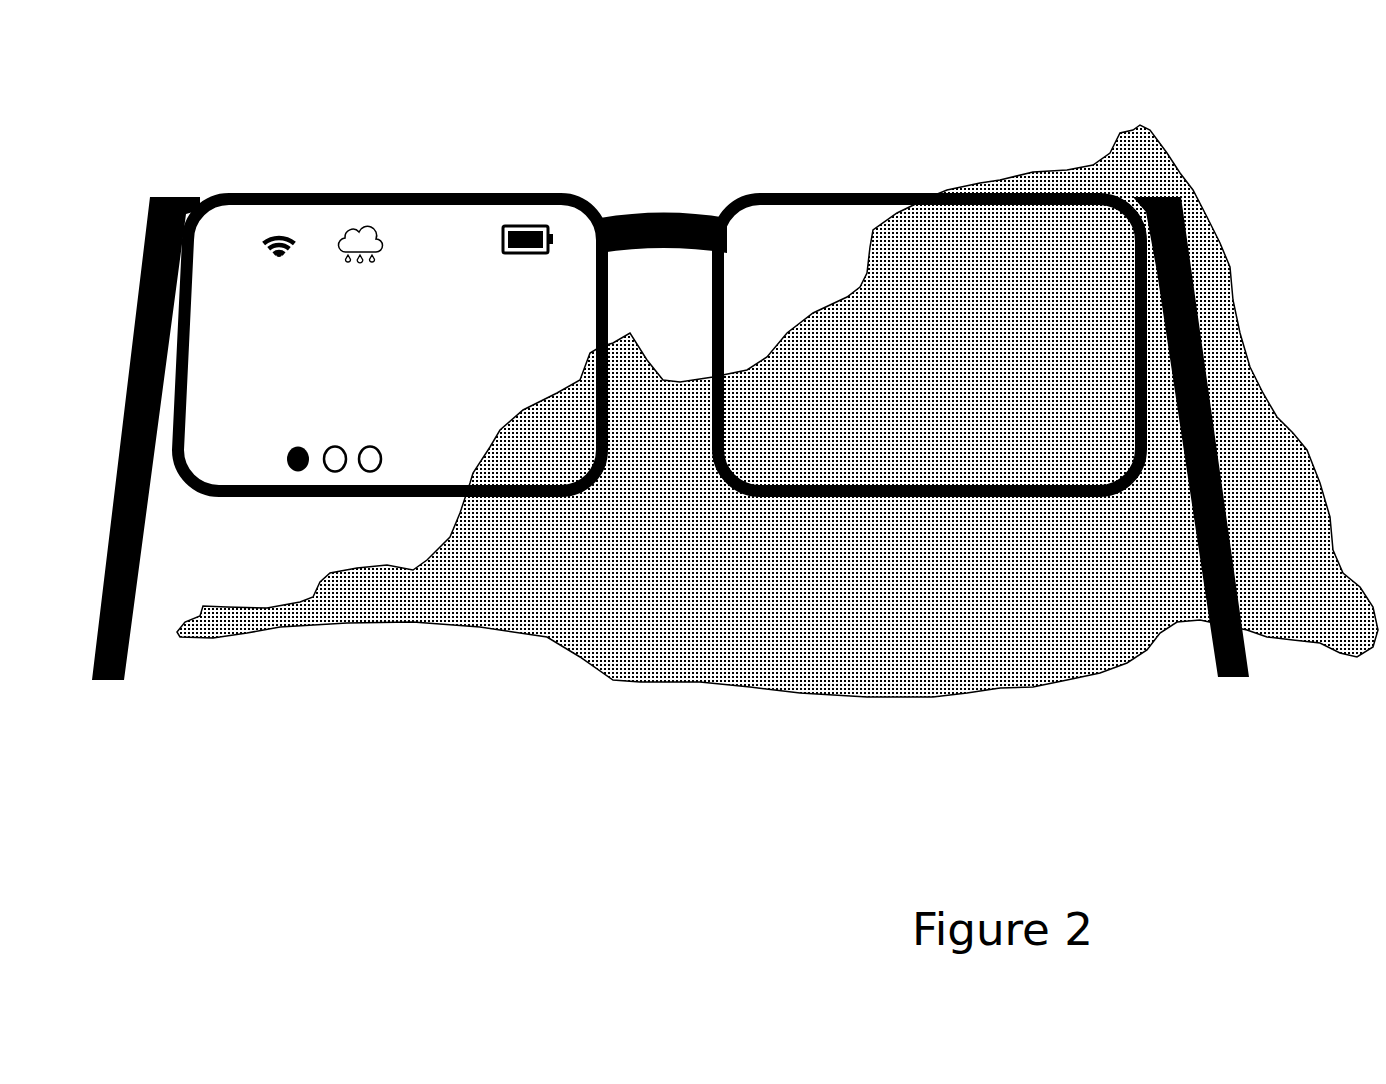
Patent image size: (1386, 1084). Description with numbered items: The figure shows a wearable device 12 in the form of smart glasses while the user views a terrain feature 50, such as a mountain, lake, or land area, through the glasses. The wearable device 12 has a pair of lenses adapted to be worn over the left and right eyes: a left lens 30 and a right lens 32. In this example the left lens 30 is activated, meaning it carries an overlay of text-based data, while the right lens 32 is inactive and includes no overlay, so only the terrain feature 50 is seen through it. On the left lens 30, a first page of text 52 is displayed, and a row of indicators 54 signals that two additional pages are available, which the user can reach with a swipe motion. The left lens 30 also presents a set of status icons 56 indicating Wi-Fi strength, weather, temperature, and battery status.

The wearable device 12 is at (246, 150).
The left lens 30 is at (472, 193).
The right lens 32 is at (806, 193).
The terrain feature 50 is at (613, 680).
The first page of text 52 is at (250, 436).
The indicators 54 is at (323, 525).
The status icons 56 is at (380, 210).